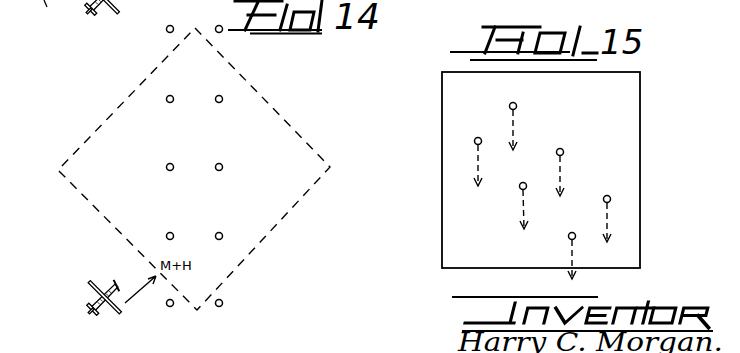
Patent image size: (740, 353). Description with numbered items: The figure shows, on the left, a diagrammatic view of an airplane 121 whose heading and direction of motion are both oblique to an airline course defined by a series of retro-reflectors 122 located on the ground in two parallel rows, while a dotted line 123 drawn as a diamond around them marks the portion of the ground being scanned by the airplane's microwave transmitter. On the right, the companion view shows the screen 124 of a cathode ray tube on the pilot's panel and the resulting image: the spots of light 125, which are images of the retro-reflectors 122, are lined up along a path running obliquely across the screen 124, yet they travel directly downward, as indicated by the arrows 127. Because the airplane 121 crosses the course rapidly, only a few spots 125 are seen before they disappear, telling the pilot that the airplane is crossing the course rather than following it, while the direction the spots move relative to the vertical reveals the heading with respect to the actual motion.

In FIG. 14, the airplane 121 is at (97, 302).
In FIG. 14, the retro-reflectors 122 is at (173, 167).
In FIG. 14, the dotted line 123 is at (263, 238).
In FIG. 15, the screen 124 is at (622, 163).
In FIG. 15, the spots of light 125 is at (479, 138).
In FIG. 15, the arrows 127 is at (510, 127).